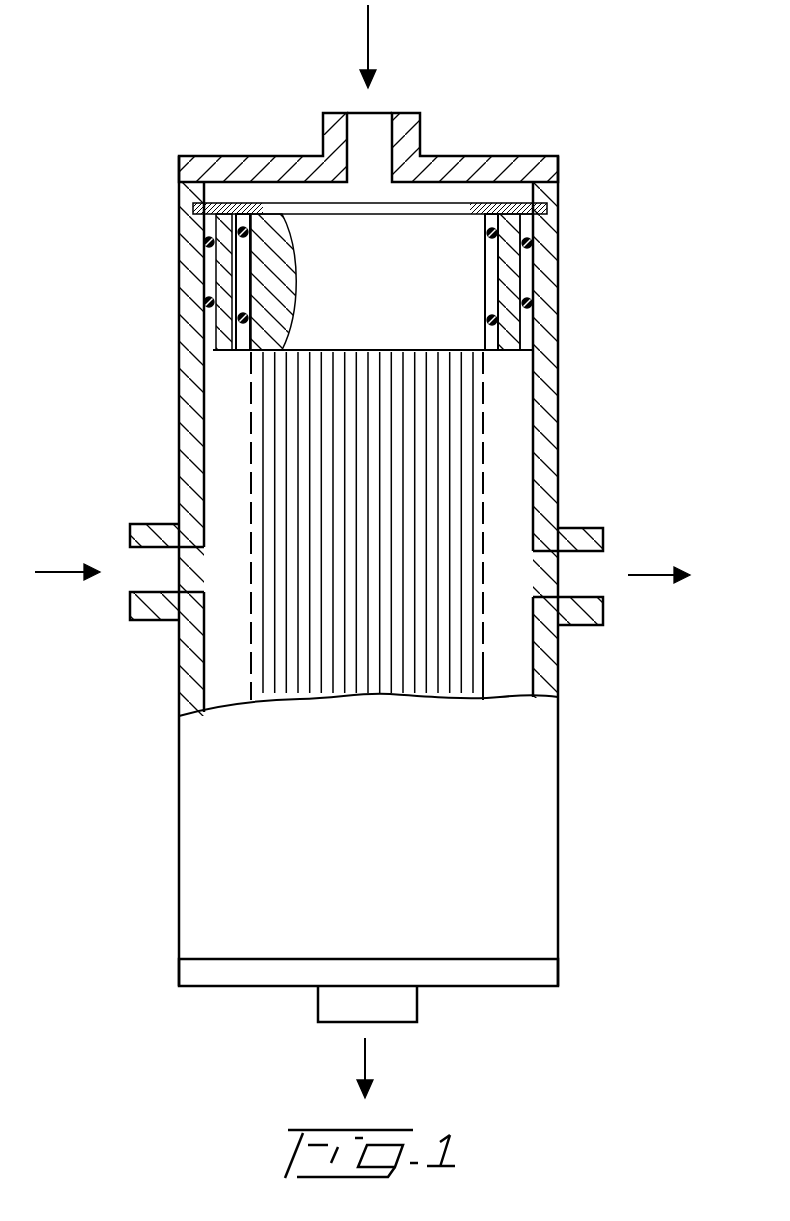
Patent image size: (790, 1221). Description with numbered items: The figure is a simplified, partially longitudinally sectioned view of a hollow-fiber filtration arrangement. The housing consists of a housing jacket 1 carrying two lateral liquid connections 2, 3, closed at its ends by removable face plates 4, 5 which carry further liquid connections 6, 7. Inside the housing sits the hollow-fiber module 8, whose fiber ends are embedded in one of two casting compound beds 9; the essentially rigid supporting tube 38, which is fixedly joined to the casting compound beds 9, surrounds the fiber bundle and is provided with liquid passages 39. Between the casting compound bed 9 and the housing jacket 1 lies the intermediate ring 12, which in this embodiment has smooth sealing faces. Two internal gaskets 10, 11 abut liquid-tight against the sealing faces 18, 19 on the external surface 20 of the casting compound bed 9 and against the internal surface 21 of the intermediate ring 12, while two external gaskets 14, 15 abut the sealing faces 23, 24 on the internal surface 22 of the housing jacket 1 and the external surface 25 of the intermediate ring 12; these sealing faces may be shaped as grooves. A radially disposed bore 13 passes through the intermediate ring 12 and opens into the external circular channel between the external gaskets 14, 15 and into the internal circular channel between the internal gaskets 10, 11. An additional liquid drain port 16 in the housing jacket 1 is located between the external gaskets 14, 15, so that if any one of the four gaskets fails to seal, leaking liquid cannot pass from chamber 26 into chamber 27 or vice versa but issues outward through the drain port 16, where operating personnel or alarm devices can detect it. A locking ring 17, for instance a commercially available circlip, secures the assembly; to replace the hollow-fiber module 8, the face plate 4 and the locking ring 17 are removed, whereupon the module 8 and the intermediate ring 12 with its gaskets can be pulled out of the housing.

The housing jacket 1 is at (546, 650).
The liquid connection 2 is at (167, 572).
The liquid connection 3 is at (568, 576).
The removable face plate 4 is at (440, 166).
The removable face plate 5 is at (368, 972).
The liquid connection 6 is at (369, 147).
The liquid connection 7 is at (367, 1004).
The hollow-fiber module 8 is at (455, 466).
The casting compound bed 9 is at (391, 282).
The internal gasket 10 is at (487, 236).
The internal gasket 11 is at (487, 322).
The intermediate ring 12 is at (228, 349).
The radially disposed bore 13 is at (224, 264).
The external gasket 14 is at (204, 242).
The external gasket 15 is at (204, 302).
The additional liquid drain port 16 is at (190, 275).
The locking ring 17 is at (546, 209).
The sealing face 18 is at (488, 255).
The sealing face 19 is at (490, 310).
The external surface of casting compound bed 20 is at (492, 352).
The internal surface of intermediate ring 21 is at (502, 290).
The internal surface of housing jacket 22 is at (251, 630).
The sealing face 23 is at (238, 232).
The sealing face 24 is at (238, 316).
The external surface of intermediate ring 25 is at (198, 212).
The chamber 26 is at (344, 186).
The chamber 27 is at (227, 527).
The supporting tube 38 is at (483, 679).
The liquid passages 39 is at (483, 626).